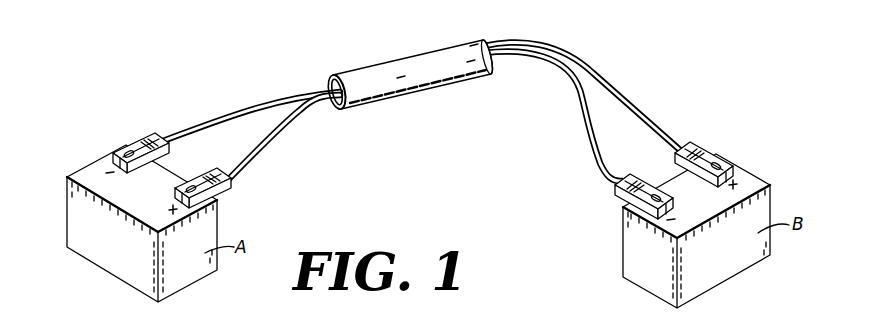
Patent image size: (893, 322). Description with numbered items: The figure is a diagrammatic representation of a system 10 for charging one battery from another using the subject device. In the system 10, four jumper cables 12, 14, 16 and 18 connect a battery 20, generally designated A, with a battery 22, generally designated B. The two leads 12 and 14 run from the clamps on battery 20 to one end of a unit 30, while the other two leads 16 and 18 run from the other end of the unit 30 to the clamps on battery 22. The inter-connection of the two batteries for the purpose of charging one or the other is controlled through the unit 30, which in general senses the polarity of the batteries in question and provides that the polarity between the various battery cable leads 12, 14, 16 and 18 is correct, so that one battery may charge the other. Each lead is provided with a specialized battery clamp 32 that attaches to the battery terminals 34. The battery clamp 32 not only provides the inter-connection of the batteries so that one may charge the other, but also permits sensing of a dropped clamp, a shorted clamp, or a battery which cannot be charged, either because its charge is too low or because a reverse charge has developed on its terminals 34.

The system 10 is at (429, 110).
The jumper cable 12 is at (261, 102).
The jumper cable 14 is at (283, 133).
The jumper cable 16 is at (593, 73).
The jumper cable 18 is at (580, 105).
The battery 20 is at (127, 277).
The battery 22 is at (713, 278).
The unit 30 is at (427, 88).
The battery clamp 32 is at (143, 136).
The terminals 34 is at (112, 160).